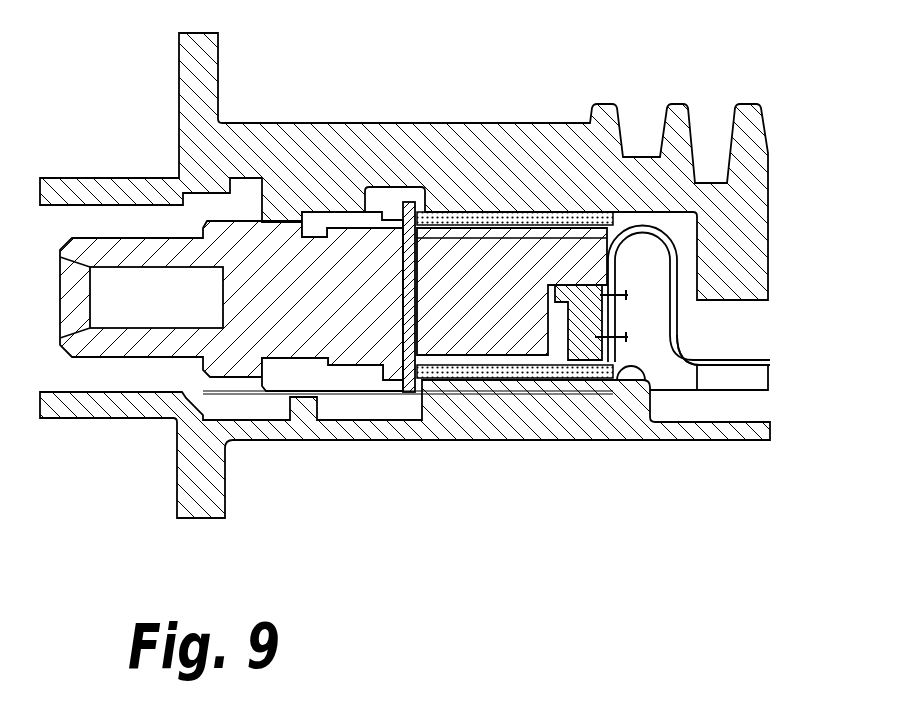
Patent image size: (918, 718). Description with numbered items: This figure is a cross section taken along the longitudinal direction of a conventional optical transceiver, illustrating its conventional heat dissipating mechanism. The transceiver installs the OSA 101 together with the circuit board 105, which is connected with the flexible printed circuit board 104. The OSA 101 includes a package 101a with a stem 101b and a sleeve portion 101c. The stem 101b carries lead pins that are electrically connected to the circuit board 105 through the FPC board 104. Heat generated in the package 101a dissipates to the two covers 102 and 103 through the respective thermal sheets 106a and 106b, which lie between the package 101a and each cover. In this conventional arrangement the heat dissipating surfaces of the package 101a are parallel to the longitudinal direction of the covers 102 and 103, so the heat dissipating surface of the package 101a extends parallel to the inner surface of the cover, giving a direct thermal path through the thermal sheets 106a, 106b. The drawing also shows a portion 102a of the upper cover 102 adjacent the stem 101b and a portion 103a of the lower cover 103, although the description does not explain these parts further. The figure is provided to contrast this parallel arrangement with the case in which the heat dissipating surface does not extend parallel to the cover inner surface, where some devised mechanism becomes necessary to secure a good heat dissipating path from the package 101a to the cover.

The OSA 101 is at (373, 376).
The package 101a is at (472, 332).
The stem 101b is at (575, 337).
The sleeve portion 101c is at (342, 312).
The cover 102 is at (523, 140).
The cover 102a is at (645, 212).
The cover 103 is at (665, 428).
The seal ring 103a is at (645, 395).
The flexible printed circuit board 104 is at (680, 300).
The circuit board 105 is at (728, 380).
The thermal sheet 106a is at (477, 213).
The thermal sheet 106b is at (440, 380).